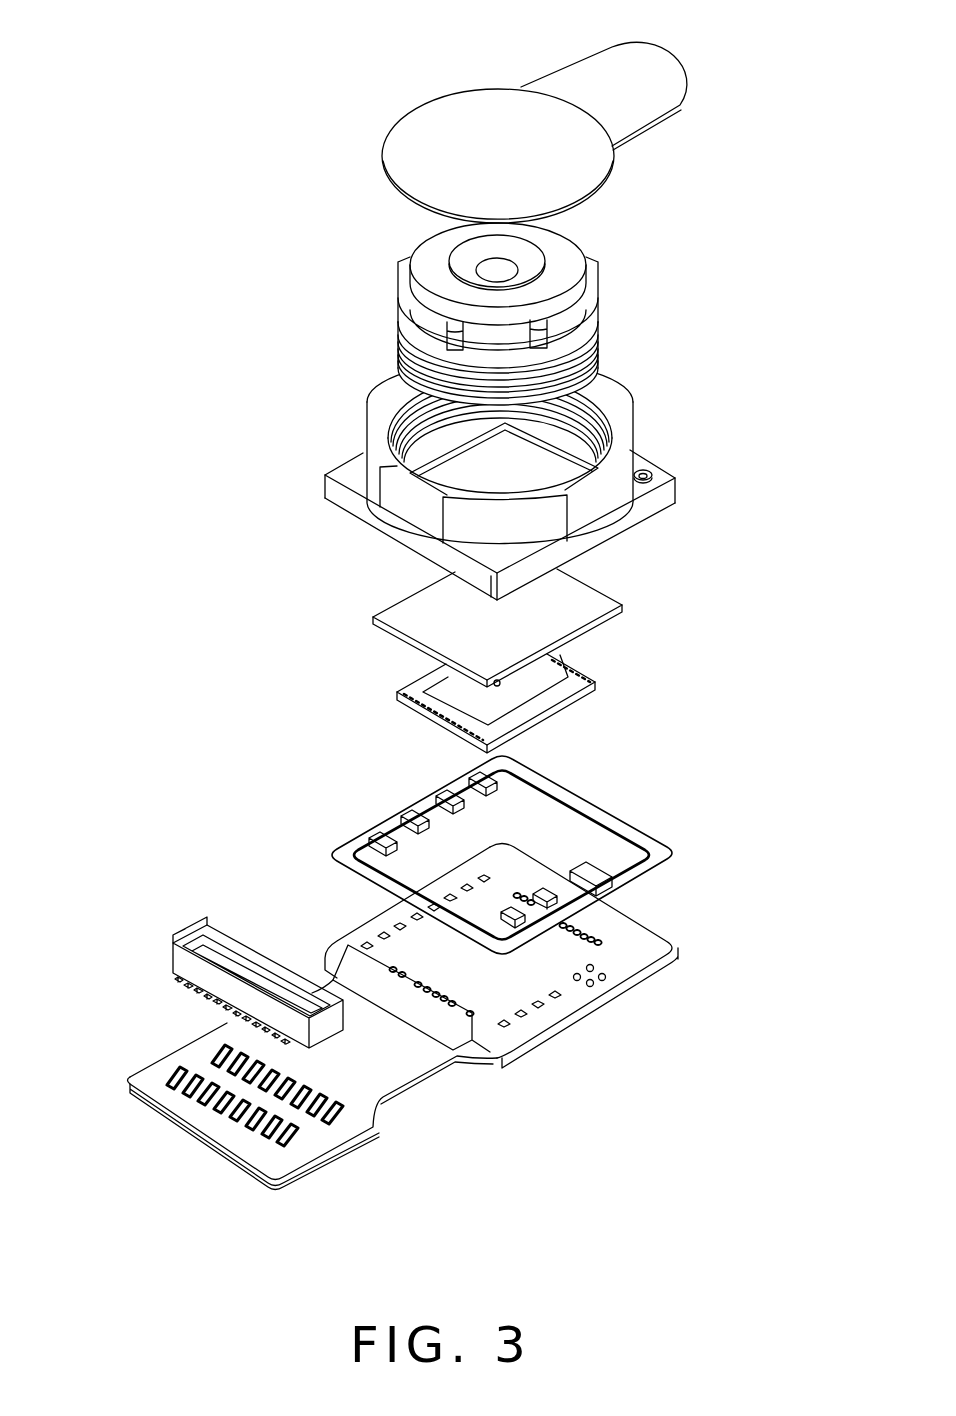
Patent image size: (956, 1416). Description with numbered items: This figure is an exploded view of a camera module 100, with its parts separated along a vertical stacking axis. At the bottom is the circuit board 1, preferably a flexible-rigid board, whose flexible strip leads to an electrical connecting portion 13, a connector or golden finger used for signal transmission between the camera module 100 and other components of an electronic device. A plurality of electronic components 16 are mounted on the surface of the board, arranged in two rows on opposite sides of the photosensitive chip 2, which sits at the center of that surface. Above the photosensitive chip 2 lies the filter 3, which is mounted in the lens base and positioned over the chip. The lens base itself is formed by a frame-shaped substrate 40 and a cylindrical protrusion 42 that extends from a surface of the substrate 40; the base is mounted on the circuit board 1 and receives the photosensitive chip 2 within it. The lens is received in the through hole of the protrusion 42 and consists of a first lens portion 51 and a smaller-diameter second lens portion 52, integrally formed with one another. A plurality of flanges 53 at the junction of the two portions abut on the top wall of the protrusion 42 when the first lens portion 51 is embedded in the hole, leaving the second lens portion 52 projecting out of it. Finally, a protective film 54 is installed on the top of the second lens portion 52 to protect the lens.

The camera module 100 is at (476, 30).
The protective film 54 is at (655, 90).
The second lens portion 52 is at (555, 245).
The flanges 53 is at (400, 320).
The first lens portion 51 is at (590, 353).
The protrusion 42 is at (372, 468).
The substrate 40 is at (347, 503).
The filter 3 is at (583, 598).
The photosensitive chip 2 is at (547, 682).
The electronic components 16 is at (640, 845).
The circuit board 1 is at (640, 952).
The electrical connecting portion 13 is at (202, 947).